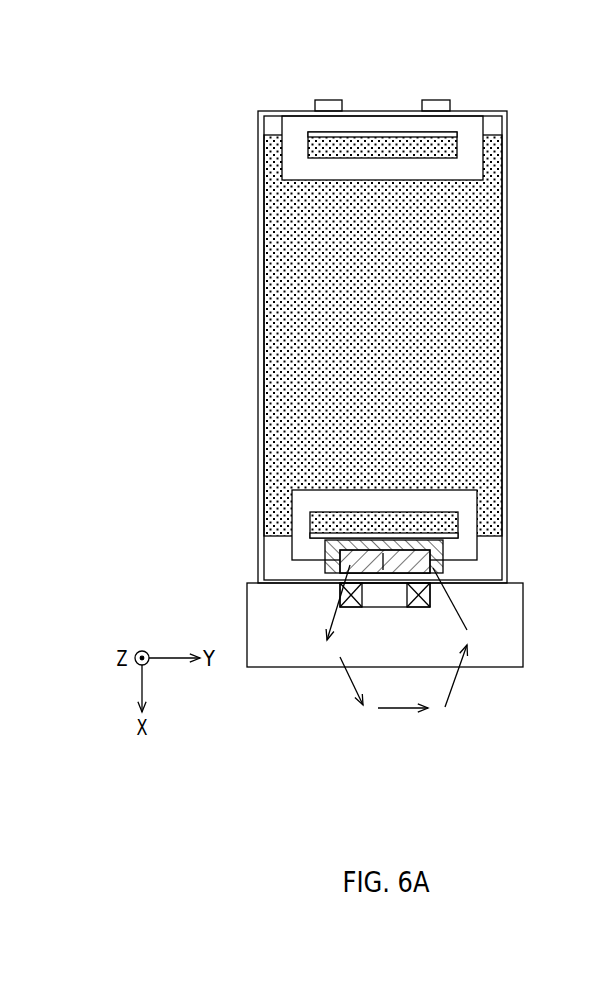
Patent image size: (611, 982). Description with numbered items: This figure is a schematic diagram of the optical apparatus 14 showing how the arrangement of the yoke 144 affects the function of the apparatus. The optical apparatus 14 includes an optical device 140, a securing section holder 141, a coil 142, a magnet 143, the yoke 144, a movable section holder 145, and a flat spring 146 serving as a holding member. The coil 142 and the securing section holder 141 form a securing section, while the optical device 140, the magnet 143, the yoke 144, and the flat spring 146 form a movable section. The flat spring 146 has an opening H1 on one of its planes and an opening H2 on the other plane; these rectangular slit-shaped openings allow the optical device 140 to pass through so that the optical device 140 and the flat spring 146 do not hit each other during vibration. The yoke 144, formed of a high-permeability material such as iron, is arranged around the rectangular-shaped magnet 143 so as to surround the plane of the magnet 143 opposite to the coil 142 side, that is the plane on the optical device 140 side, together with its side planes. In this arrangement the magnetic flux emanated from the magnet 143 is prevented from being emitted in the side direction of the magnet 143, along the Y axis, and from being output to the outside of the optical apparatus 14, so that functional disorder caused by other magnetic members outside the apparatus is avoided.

The optical apparatus 14 is at (517, 88).
The optical device 140 is at (492, 330).
The securing section holder 141 is at (497, 665).
The coil 142 is at (400, 597).
The magnet 143 is at (375, 562).
The yoke 144 is at (326, 547).
The movable section holder 145 is at (308, 512).
The flat spring 146 is at (258, 232).
The opening H1 is at (261, 287).
The opening H2 is at (508, 288).